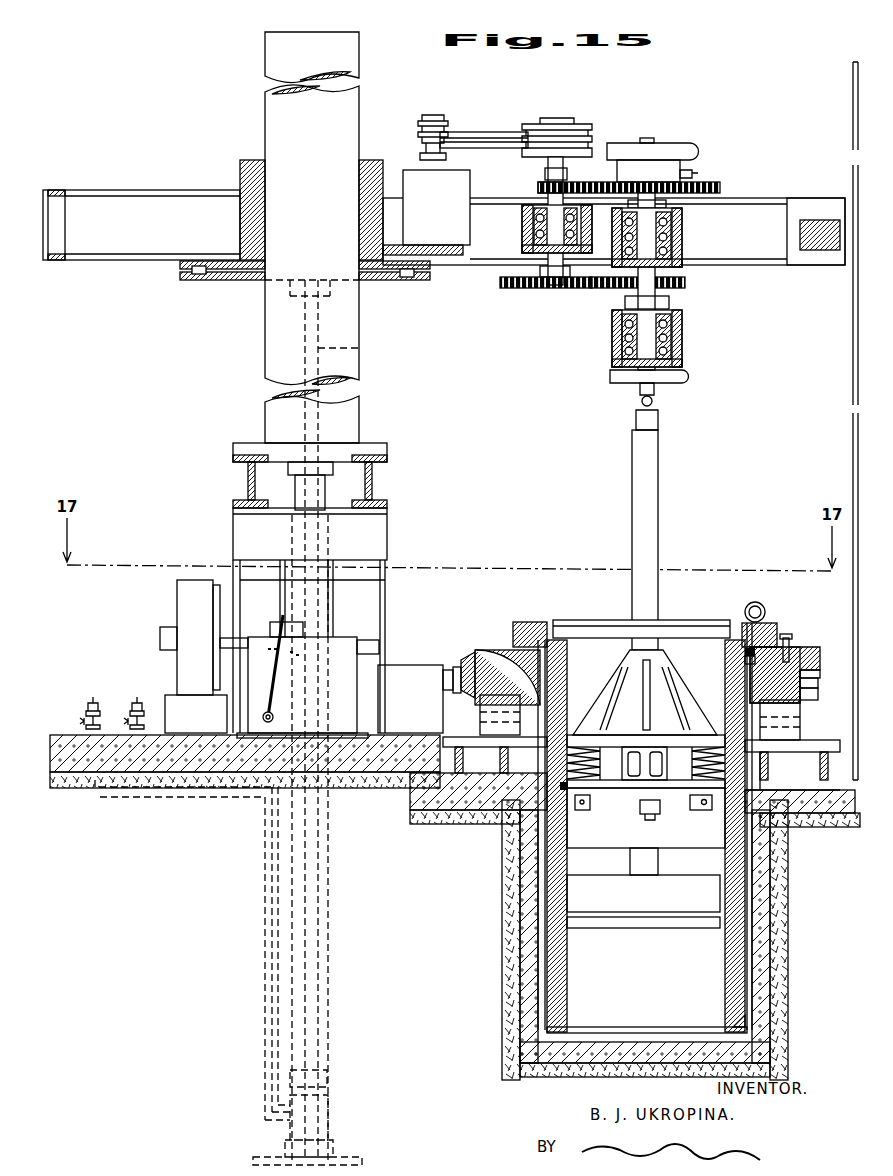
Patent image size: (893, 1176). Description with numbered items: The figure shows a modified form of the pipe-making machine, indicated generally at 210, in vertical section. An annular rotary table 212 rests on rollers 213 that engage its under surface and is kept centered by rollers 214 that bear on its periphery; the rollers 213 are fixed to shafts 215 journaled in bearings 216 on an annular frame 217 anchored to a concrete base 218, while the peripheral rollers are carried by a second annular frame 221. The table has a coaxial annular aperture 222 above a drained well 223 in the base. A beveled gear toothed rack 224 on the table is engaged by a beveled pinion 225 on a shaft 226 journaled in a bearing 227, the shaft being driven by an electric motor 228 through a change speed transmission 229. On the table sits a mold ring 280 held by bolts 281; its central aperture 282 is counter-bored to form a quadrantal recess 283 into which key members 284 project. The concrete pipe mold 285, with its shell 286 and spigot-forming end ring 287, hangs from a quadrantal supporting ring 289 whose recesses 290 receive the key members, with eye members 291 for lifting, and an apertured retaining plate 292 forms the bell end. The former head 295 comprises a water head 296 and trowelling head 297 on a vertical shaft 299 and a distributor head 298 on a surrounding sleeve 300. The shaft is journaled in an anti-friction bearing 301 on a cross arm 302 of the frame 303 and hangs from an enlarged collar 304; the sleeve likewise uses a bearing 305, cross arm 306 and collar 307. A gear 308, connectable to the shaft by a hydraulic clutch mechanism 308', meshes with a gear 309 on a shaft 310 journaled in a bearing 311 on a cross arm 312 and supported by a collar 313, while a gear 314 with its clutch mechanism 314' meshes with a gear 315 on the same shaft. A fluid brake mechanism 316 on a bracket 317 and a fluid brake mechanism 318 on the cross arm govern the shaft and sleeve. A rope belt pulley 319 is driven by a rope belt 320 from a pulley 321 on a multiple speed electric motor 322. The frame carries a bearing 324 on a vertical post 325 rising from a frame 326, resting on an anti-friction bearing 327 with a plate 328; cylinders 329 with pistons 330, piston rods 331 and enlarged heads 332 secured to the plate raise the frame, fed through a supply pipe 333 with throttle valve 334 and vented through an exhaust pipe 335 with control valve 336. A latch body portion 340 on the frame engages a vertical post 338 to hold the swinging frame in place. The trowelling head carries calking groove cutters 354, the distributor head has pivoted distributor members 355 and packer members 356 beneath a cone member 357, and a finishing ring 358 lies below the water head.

The modified form of the invention 210 is at (139, 190).
The rotary table 212 is at (806, 660).
The rollers 213 is at (515, 702).
The rollers 214 is at (815, 687).
The shafts 215 is at (495, 708).
The bearings 216 is at (495, 722).
The annular frame 217 is at (795, 795).
The concrete base 218 is at (440, 790).
The annular frame 221 is at (815, 792).
The coaxial annular aperture 222 is at (485, 685).
The well 223 is at (752, 978).
The annular beveled gear toothed rack 224 is at (826, 680).
The beveled pinion 225 is at (458, 665).
The shaft 226 is at (455, 670).
The bearing 227 is at (410, 672).
The electric motor 228 is at (180, 597).
The change speed transmission 229 is at (348, 643).
The mold ring 280 is at (780, 628).
The bolts 281 is at (788, 640).
The central aperture 282 is at (745, 660).
The recess 283 is at (745, 652).
The key members 284 is at (530, 626).
The concrete pipe mold 285 is at (540, 948).
The shell 286 is at (540, 973).
The end ring 287 is at (740, 1018).
The supporting ring 289 is at (760, 630).
The recesses 290 is at (557, 625).
The eye members 291 is at (746, 606).
The apertured retaining plate 292 is at (570, 630).
The former head 295 is at (632, 942).
The water head 296 is at (571, 896).
The trowelling head 297 is at (569, 846).
The distributor head 298 is at (565, 787).
The vertical shaft 299 is at (648, 138).
The sleeve 300 is at (658, 487).
The anti-friction bearing 301 is at (682, 236).
The cross arm 302 is at (682, 252).
The frame 303 is at (205, 195).
The enlarged collar 304 is at (660, 205).
The anti-friction bearing 305 is at (682, 332).
The cross arm 306 is at (682, 351).
The enlarged collar 307 is at (669, 305).
The gear 308 is at (652, 190).
The hydraulic clutch mechanism 308' is at (711, 164).
The gear 309 is at (540, 190).
The shaft 310 is at (548, 170).
The anti-friction bearing 311 is at (525, 218).
The cross arm 312 is at (528, 236).
The enlarged collar 313 is at (567, 200).
The gear 314 is at (659, 289).
The clutch mechanism 314' is at (585, 291).
The gear 315 is at (515, 290).
The fluid brake mechanism 316 is at (680, 150).
The bracket 317 is at (630, 165).
The fluid brake mechanism 318 is at (610, 377).
The rope belt pulley 319 is at (580, 124).
The rope belt 320 is at (490, 131).
The pulley 321 is at (425, 125).
The multiple speed electric motor 322 is at (412, 172).
The bearing 324 is at (247, 165).
The vertical post 325 is at (267, 338).
The frame 326 is at (235, 503).
The anti-friction bearing 327 is at (195, 272).
The plate 328 is at (235, 278).
The cylinders 329 is at (325, 487).
The piston 330 is at (327, 1076).
The piston rod 331 is at (360, 348).
The enlarged head 332 is at (330, 290).
The supply pipe 333 is at (93, 707).
The throttle valve 334 is at (84, 722).
The exhaust pipe 335 is at (138, 710).
The control valve 336 is at (132, 715).
The vertical post 338 is at (852, 328).
The body portion 340 is at (835, 208).
The calking groove cutters 354 is at (650, 818).
The pivoted distributor members 355 is at (618, 782).
The packer members 356 is at (682, 782).
The cone member 357 is at (612, 680).
The finishing ring 358 is at (590, 929).